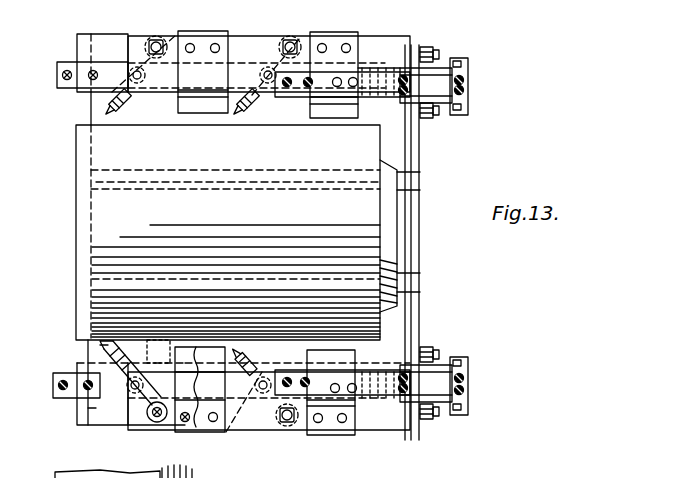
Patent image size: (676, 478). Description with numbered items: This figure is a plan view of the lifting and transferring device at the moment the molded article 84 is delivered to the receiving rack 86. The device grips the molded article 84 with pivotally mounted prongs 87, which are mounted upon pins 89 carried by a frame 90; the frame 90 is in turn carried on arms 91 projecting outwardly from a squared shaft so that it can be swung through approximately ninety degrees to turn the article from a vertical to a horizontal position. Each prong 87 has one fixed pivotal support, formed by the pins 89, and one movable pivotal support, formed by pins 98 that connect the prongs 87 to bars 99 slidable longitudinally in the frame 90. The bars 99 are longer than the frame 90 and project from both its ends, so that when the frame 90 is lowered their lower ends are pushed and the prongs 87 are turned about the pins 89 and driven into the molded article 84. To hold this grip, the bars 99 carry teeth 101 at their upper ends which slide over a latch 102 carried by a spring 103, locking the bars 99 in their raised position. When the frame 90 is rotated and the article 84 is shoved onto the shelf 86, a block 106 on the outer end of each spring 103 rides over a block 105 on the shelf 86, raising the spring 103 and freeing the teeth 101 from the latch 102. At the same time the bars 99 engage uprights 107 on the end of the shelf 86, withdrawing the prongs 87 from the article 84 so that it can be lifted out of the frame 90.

The molded article 84 is at (96, 194).
The horizontal rack 86 is at (397, 320).
The prongs 87 is at (108, 103).
The pins 89 is at (157, 38).
The frame 90 is at (250, 44).
The arms 91 is at (101, 13).
The pins 98 is at (128, 398).
The bars 99 is at (57, 76).
The teeth 101 is at (366, 72).
The latch 102 is at (398, 94).
The spring 103 is at (442, 86).
The block 105 is at (436, 64).
The block 106 is at (468, 69).
The uprights 107 is at (420, 183).